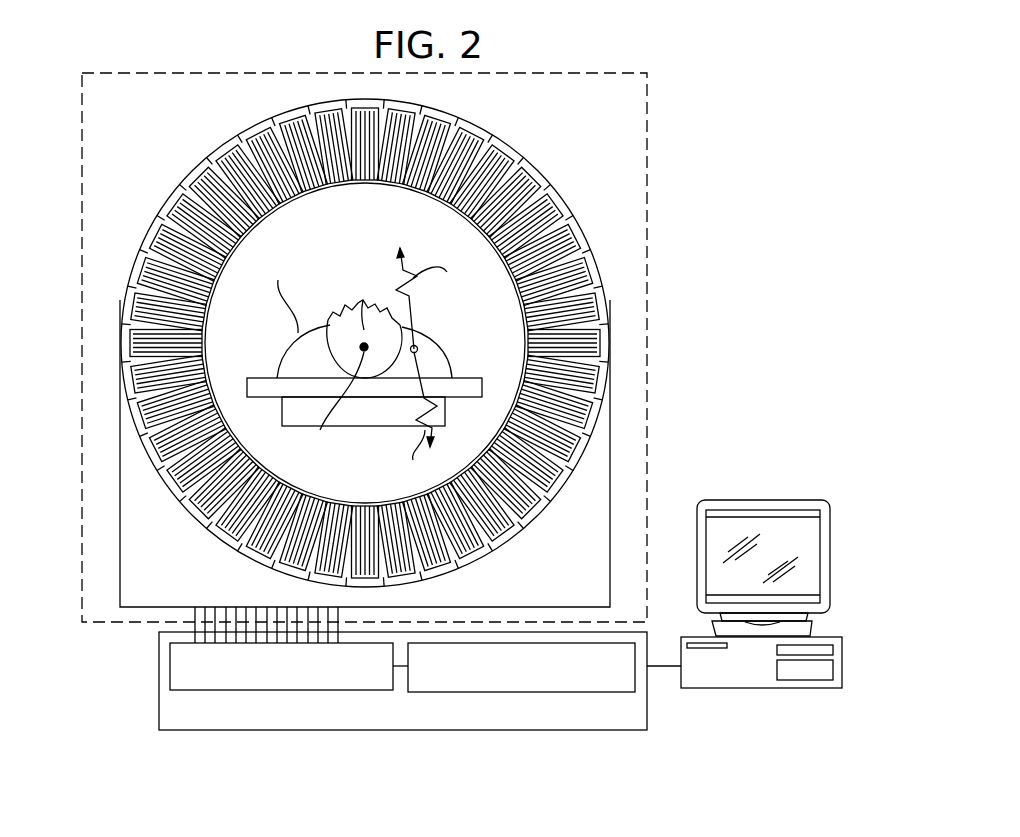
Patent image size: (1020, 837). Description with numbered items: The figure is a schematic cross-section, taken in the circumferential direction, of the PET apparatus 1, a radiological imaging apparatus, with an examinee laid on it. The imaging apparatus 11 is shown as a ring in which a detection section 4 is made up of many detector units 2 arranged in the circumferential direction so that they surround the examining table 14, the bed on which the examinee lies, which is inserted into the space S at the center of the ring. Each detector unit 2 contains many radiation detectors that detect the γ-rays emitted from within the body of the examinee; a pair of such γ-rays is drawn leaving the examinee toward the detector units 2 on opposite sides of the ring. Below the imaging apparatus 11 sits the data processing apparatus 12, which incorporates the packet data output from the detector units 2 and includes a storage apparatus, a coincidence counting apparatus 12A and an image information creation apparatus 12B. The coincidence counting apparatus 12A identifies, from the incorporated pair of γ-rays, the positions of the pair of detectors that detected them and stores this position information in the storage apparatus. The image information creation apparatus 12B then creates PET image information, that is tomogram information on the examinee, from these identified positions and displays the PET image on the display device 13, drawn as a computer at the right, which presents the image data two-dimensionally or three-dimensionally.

The PET apparatus 1 is at (398, 347).
The detector unit 2 is at (547, 187).
The detection section 4 is at (200, 162).
The imaging apparatus 11 is at (650, 237).
The data processing apparatus 12 is at (404, 680).
The coincidence counting apparatus 12A is at (170, 679).
The image information creation apparatus 12B is at (636, 680).
The display device 13 is at (725, 500).
The examining table 14 is at (253, 378).
The space S is at (277, 243).